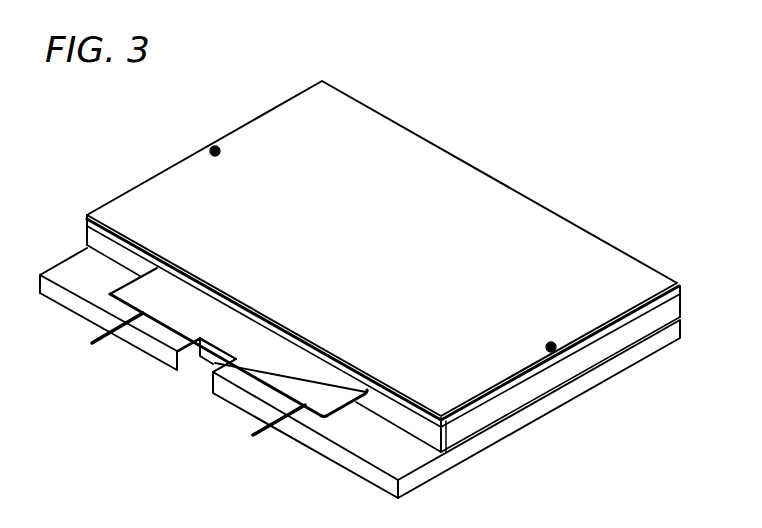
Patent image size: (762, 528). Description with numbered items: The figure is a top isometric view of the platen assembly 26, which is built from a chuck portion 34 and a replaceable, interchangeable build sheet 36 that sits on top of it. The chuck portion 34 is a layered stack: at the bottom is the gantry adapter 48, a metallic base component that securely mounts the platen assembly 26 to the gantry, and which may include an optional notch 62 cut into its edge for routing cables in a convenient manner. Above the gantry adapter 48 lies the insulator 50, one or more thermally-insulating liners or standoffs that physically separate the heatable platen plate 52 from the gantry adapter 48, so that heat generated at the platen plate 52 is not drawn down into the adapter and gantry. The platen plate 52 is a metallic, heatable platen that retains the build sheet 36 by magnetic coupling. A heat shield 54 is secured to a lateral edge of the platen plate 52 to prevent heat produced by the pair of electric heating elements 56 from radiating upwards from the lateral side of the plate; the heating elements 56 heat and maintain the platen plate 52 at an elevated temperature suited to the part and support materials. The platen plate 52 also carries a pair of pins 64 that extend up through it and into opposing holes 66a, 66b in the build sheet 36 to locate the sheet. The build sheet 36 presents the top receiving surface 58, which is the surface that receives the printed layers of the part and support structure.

The platen assembly 26 is at (377, 285).
The chuck portion 34 is at (411, 266).
The build sheet 36 is at (383, 266).
The gantry adapter 48 is at (577, 390).
The insulator 50 is at (612, 360).
The platen plate 52 is at (657, 322).
The heat shield 54 is at (248, 333).
The heating elements 56 is at (90, 343).
The top receiving surface 58 is at (523, 206).
The notch 62 is at (188, 386).
The pins 64 is at (216, 146).
The hole 66a is at (535, 346).
The hole 66b is at (239, 151).